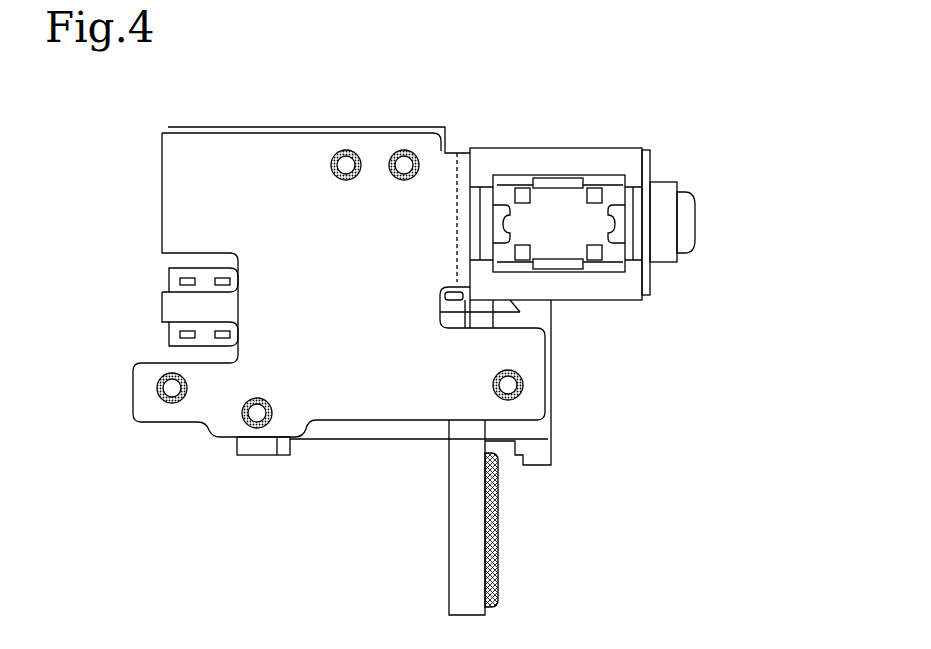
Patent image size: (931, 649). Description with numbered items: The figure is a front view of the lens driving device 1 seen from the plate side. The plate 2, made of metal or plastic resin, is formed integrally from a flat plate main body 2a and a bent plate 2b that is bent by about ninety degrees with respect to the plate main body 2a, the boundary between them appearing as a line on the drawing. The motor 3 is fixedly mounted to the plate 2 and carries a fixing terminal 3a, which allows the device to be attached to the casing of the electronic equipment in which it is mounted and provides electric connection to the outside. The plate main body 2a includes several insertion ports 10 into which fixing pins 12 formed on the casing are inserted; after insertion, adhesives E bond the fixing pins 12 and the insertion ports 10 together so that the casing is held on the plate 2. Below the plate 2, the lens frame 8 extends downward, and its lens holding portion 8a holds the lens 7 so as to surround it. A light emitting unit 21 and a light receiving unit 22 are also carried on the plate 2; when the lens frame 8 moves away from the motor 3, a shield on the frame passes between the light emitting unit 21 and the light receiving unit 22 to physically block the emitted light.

The lens driving device 1 is at (695, 135).
The plate 2 is at (150, 196).
The plate main body 2a is at (183, 228).
The bent plate 2b is at (462, 178).
The motor 3 is at (597, 157).
The fixing terminal 3a is at (557, 207).
The lens 7 is at (498, 502).
The lens frame 8 is at (495, 620).
The lens holding portion 8a is at (455, 568).
The insertion ports 10 is at (335, 152).
The fixing pins 12 is at (346, 167).
The light emitting unit 21 is at (170, 283).
The light receiving unit 22 is at (170, 333).
The adhesives E is at (332, 167).